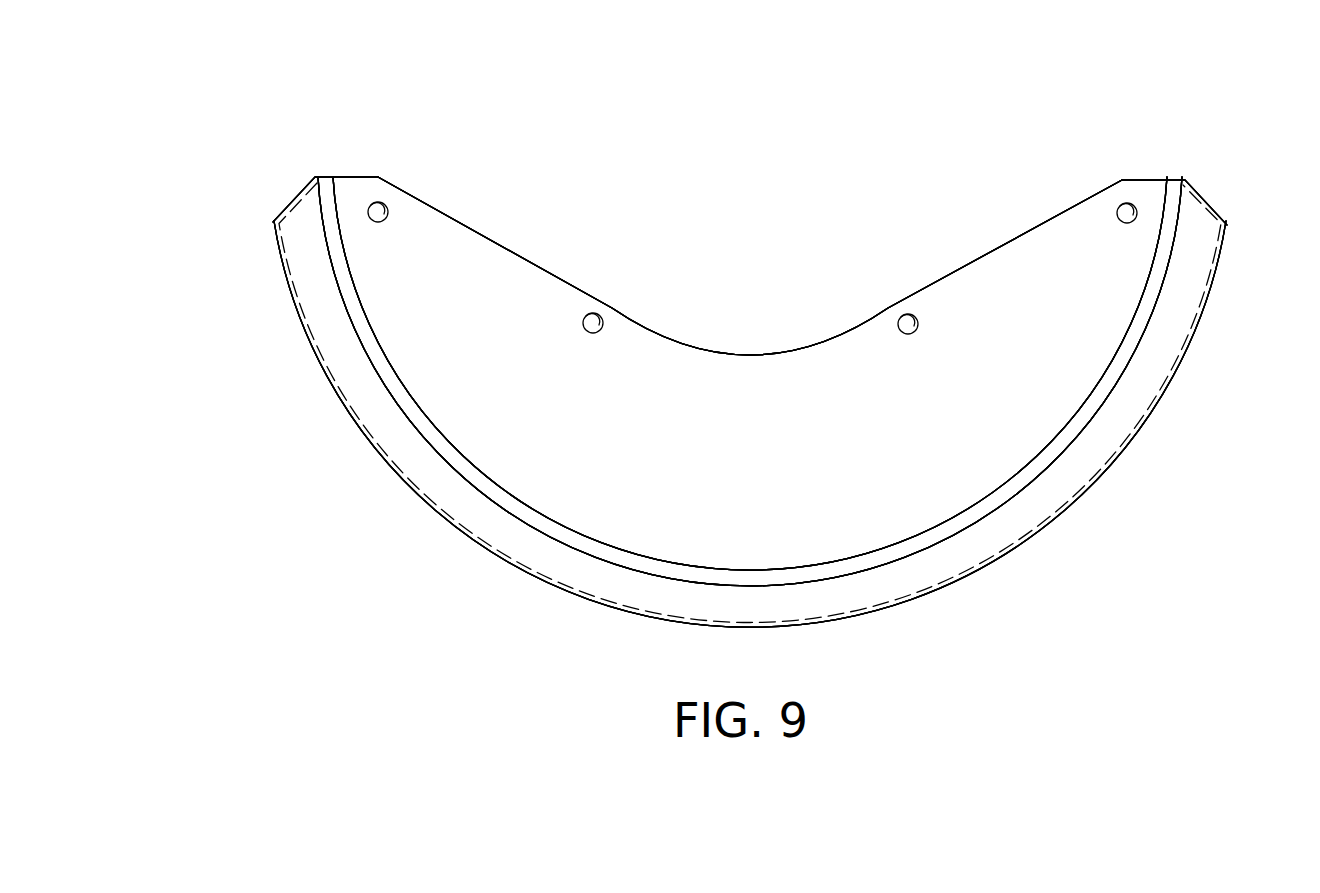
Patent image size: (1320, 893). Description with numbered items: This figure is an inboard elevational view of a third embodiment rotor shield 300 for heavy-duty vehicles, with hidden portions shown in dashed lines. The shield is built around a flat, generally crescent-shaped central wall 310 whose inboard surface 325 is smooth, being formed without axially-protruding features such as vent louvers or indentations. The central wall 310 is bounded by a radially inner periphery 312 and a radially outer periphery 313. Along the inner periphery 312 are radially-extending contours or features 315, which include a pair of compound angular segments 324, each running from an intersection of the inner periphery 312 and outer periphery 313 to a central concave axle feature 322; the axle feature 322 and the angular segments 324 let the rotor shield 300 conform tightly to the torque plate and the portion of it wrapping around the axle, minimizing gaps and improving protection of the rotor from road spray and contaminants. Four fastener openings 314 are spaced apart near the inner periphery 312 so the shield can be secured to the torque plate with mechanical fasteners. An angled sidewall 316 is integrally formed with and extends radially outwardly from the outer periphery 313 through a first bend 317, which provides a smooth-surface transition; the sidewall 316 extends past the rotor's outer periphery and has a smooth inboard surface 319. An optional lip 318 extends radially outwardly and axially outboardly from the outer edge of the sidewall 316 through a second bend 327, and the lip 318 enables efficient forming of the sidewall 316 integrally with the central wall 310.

The rotor shield 300 is at (248, 142).
The central wall 310 is at (1040, 410).
The radially inner periphery 312 is at (370, 175).
The radially outer periphery 313 is at (458, 452).
The fastener openings 314 is at (390, 206).
The radially-extending contours or features 315 is at (460, 200).
The angled sidewall 316 is at (570, 557).
The first bend 317 is at (933, 537).
The lip 318 is at (352, 415).
The inboard surface 319 is at (1168, 322).
The central concave axle feature 322 is at (748, 355).
The compound angular segments 324 is at (515, 250).
The inboard surface 325 is at (780, 515).
The second bend 327 is at (483, 547).